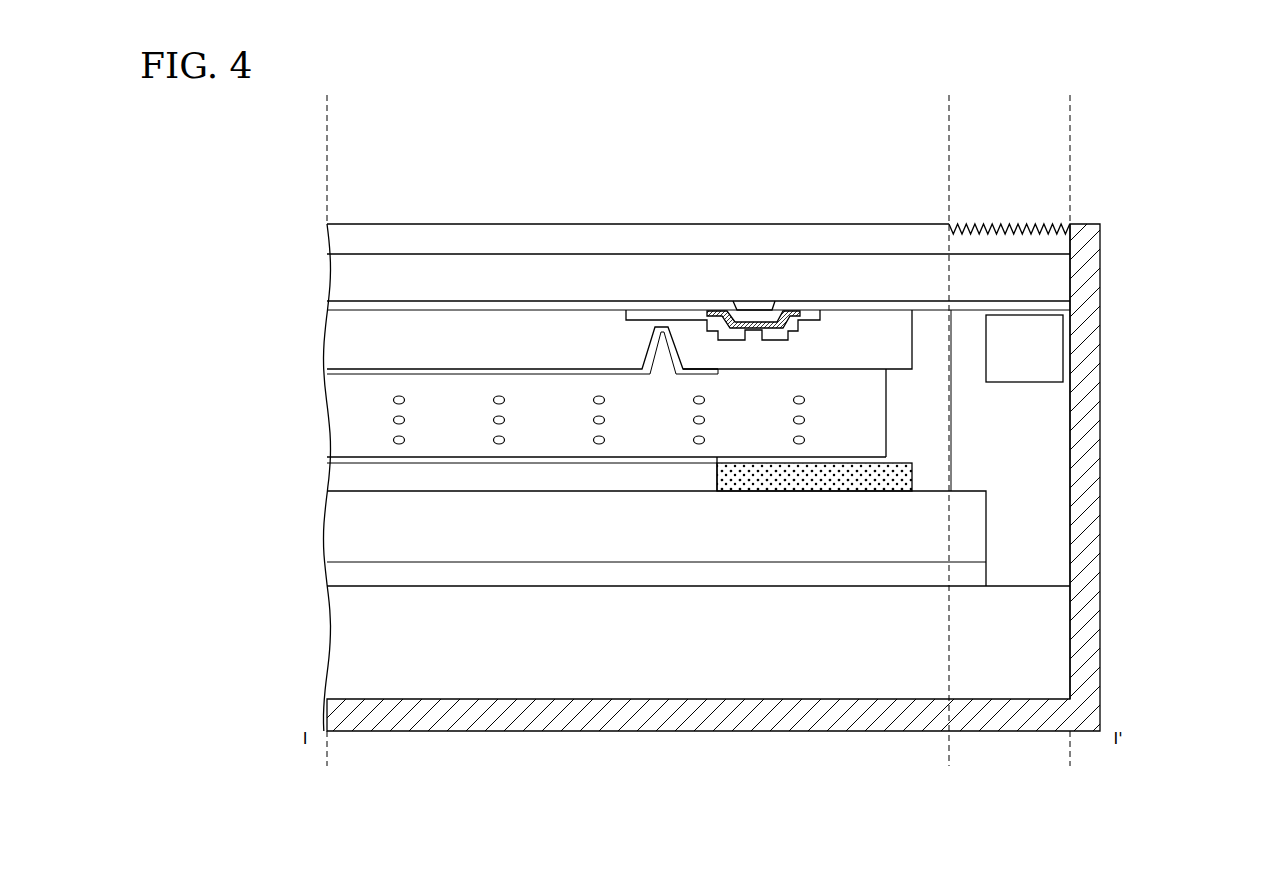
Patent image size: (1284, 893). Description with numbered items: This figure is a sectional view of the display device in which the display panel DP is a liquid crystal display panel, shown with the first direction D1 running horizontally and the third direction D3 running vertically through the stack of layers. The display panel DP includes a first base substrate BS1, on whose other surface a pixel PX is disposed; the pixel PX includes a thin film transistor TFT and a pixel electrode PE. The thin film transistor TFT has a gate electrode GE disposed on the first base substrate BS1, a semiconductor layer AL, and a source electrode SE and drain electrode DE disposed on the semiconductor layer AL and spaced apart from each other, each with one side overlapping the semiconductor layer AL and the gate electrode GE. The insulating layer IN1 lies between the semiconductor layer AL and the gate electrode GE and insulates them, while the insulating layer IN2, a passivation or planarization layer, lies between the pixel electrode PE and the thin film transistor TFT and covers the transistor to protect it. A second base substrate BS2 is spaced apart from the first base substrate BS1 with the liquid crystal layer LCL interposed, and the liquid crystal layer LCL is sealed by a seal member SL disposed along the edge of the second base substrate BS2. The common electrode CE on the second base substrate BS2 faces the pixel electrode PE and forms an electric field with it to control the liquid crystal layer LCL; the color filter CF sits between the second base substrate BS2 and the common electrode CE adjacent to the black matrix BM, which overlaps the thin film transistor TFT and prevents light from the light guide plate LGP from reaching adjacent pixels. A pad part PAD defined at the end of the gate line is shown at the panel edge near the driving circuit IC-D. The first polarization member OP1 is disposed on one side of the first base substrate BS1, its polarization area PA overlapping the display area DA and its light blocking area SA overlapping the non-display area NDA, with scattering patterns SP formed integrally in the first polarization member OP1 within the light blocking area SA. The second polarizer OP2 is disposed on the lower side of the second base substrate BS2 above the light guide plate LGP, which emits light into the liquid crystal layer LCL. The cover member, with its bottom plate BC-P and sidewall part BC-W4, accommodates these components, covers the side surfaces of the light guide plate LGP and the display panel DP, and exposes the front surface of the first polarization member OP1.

The first polarization member OP1 is at (337, 235).
The first base substrate BS1 is at (337, 275).
The insulating layer IN1 is at (337, 306).
The insulating layer IN2 is at (337, 338).
The display panel DP is at (252, 265).
The liquid crystal layer LCL is at (337, 421).
The common electrode CE is at (337, 460).
The color filter CF is at (337, 481).
The second base substrate BS2 is at (337, 528).
The second polarizer OP2 is at (337, 573).
The light guide plate LGP is at (337, 640).
The cover member plate BC-P is at (337, 711).
The sidewall part BC-W4 is at (1096, 463).
The polarization area PA is at (327, 99).
The light blocking area SA is at (949, 99).
The pixel PX is at (768, 143).
The pixel electrode PE is at (583, 372).
The thin film transistor TFT is at (818, 179).
The drain electrode DE is at (686, 316).
The semiconductor layer AL is at (715, 313).
The gate electrode GE is at (753, 307).
The source electrode SE is at (792, 316).
The scattering patterns SP is at (999, 226).
The pad part PAD is at (1027, 310).
The driving integrated circuit IC-D is at (1049, 344).
The seal member SL is at (940, 419).
The black matrix BM is at (850, 471).
The display area DA is at (327, 755).
The non-display area NDA is at (949, 755).
The first direction D1 is at (1186, 751).
The third direction D3 is at (1186, 751).